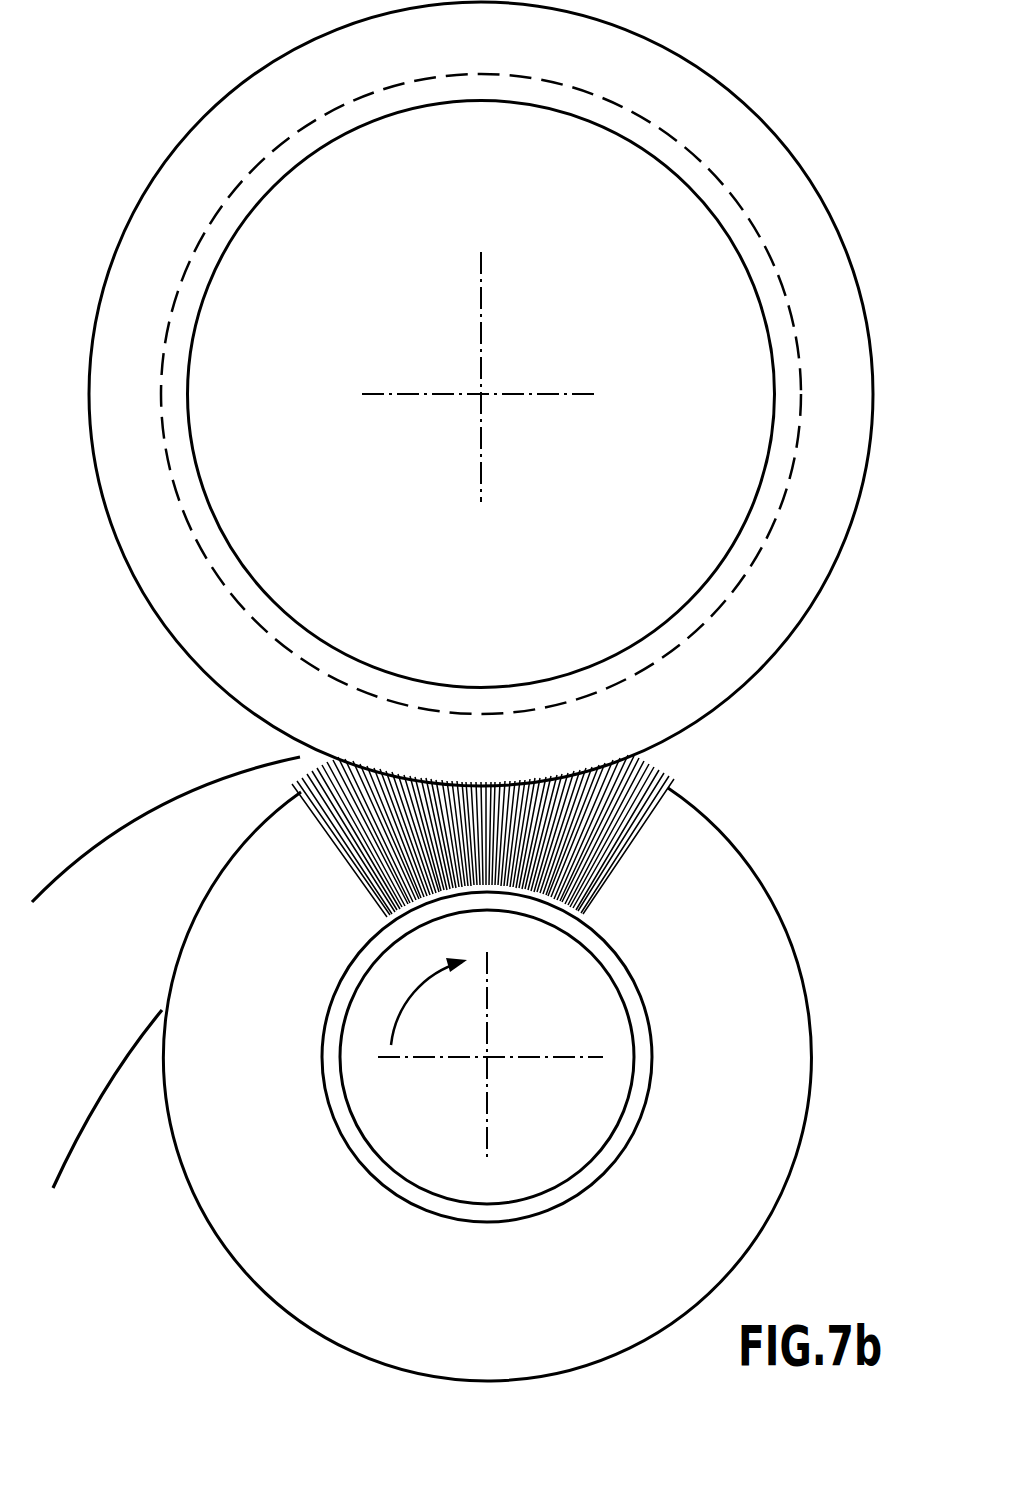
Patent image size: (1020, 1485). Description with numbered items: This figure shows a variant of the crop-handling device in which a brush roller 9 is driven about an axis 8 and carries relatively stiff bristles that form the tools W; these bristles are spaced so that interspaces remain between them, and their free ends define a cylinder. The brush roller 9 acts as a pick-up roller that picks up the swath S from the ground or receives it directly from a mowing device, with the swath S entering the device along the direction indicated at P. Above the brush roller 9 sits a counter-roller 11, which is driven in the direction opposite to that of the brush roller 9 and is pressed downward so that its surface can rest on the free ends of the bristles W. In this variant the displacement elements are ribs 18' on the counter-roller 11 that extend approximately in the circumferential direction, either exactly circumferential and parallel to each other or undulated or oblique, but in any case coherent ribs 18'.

The counter-roller 11 is at (687, 522).
The ribs 18' is at (493, 416).
The brush roller 9 is at (753, 973).
The axis 8 is at (487, 1057).
The tools W is at (475, 839).
The swath S is at (103, 913).
The sheet feed direction P is at (228, 762).